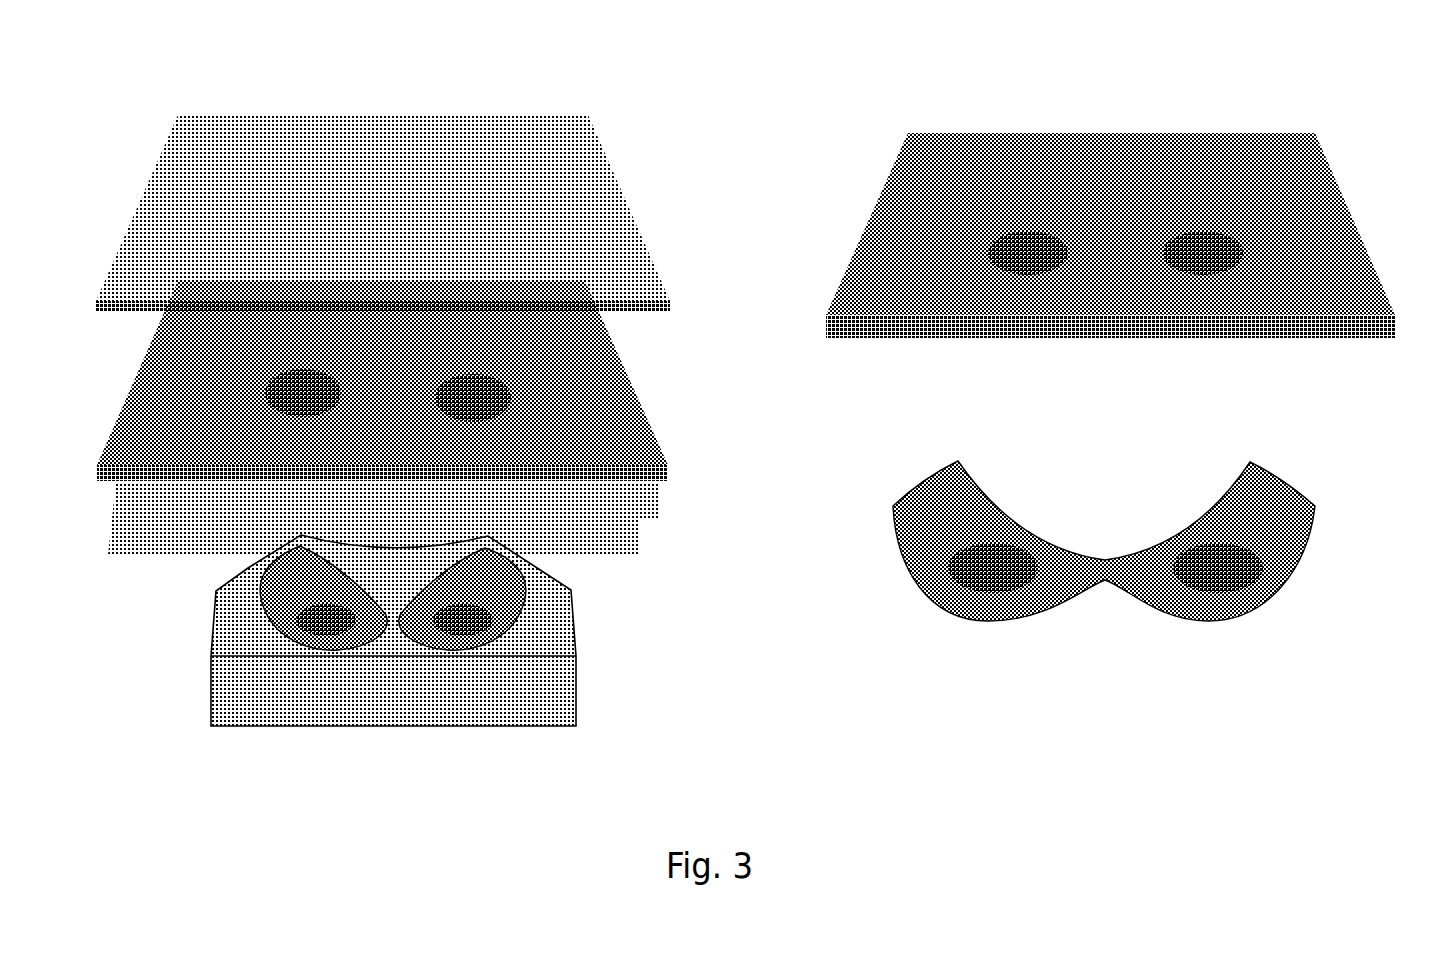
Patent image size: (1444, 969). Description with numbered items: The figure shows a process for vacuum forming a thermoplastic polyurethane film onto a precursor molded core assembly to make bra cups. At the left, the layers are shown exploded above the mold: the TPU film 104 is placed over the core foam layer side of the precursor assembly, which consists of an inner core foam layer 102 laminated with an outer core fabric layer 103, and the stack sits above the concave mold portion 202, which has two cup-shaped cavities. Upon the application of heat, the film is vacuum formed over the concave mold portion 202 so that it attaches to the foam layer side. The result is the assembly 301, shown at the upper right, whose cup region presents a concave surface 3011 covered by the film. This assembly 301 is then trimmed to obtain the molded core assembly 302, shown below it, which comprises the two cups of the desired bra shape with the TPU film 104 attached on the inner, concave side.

The TPU film 104 is at (628, 220).
The inner core foam layer 102 is at (618, 367).
The outer core fabric layer 103 is at (640, 473).
The concave mold portion 202 is at (570, 638).
The assembly 301 is at (1283, 330).
The concave surface 3011 is at (1200, 253).
The molded core assembly 302 is at (1247, 608).